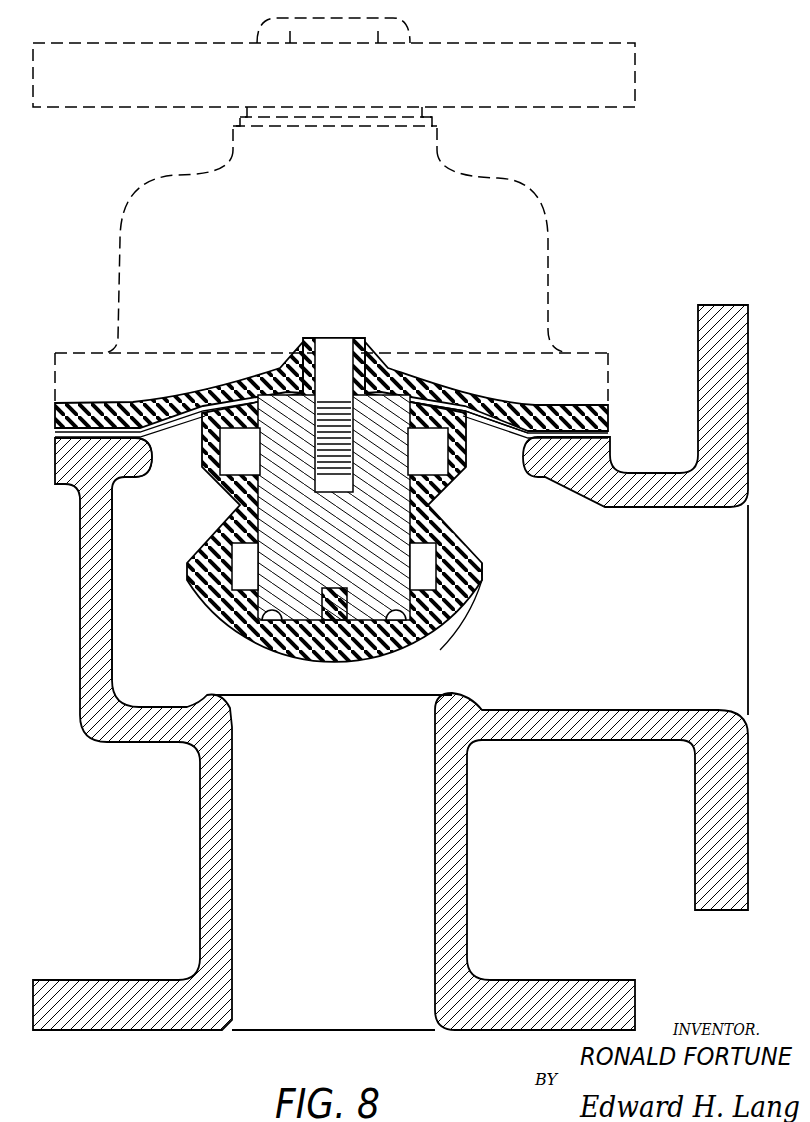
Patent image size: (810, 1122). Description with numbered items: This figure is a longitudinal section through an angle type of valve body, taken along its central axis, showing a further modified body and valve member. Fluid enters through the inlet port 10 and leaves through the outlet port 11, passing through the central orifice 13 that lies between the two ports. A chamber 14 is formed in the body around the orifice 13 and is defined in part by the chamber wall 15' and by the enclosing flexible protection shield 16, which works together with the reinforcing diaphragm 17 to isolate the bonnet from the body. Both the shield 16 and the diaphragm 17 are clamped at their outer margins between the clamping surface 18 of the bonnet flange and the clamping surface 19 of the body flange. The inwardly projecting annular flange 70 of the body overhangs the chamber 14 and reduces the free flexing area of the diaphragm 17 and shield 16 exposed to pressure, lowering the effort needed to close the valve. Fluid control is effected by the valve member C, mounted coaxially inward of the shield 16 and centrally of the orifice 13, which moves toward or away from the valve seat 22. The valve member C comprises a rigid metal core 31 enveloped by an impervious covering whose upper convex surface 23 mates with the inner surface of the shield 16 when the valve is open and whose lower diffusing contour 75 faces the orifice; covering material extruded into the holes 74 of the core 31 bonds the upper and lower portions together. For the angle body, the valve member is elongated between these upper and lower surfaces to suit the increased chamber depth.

The inlet port 10 is at (346, 1032).
The outlet port 11 is at (749, 619).
The central orifice 13 is at (530, 861).
The chamber 14 is at (335, 529).
The wall 15' is at (138, 585).
The flexible protection shield 16 is at (609, 436).
The reinforcing diaphragm 17 is at (611, 416).
The clamping surface of the bonnet flange 18 is at (105, 400).
The clamping surface of the body flange 19 is at (56, 458).
The valve seat 22 is at (278, 694).
The upper convex surface 23 is at (440, 410).
The rigid core 31 is at (334, 479).
The inwardly projecting annular flange 70 is at (149, 455).
The holes 74 is at (334, 509).
The lower diffusing contour 75 is at (397, 650).
The valve member C is at (485, 573).